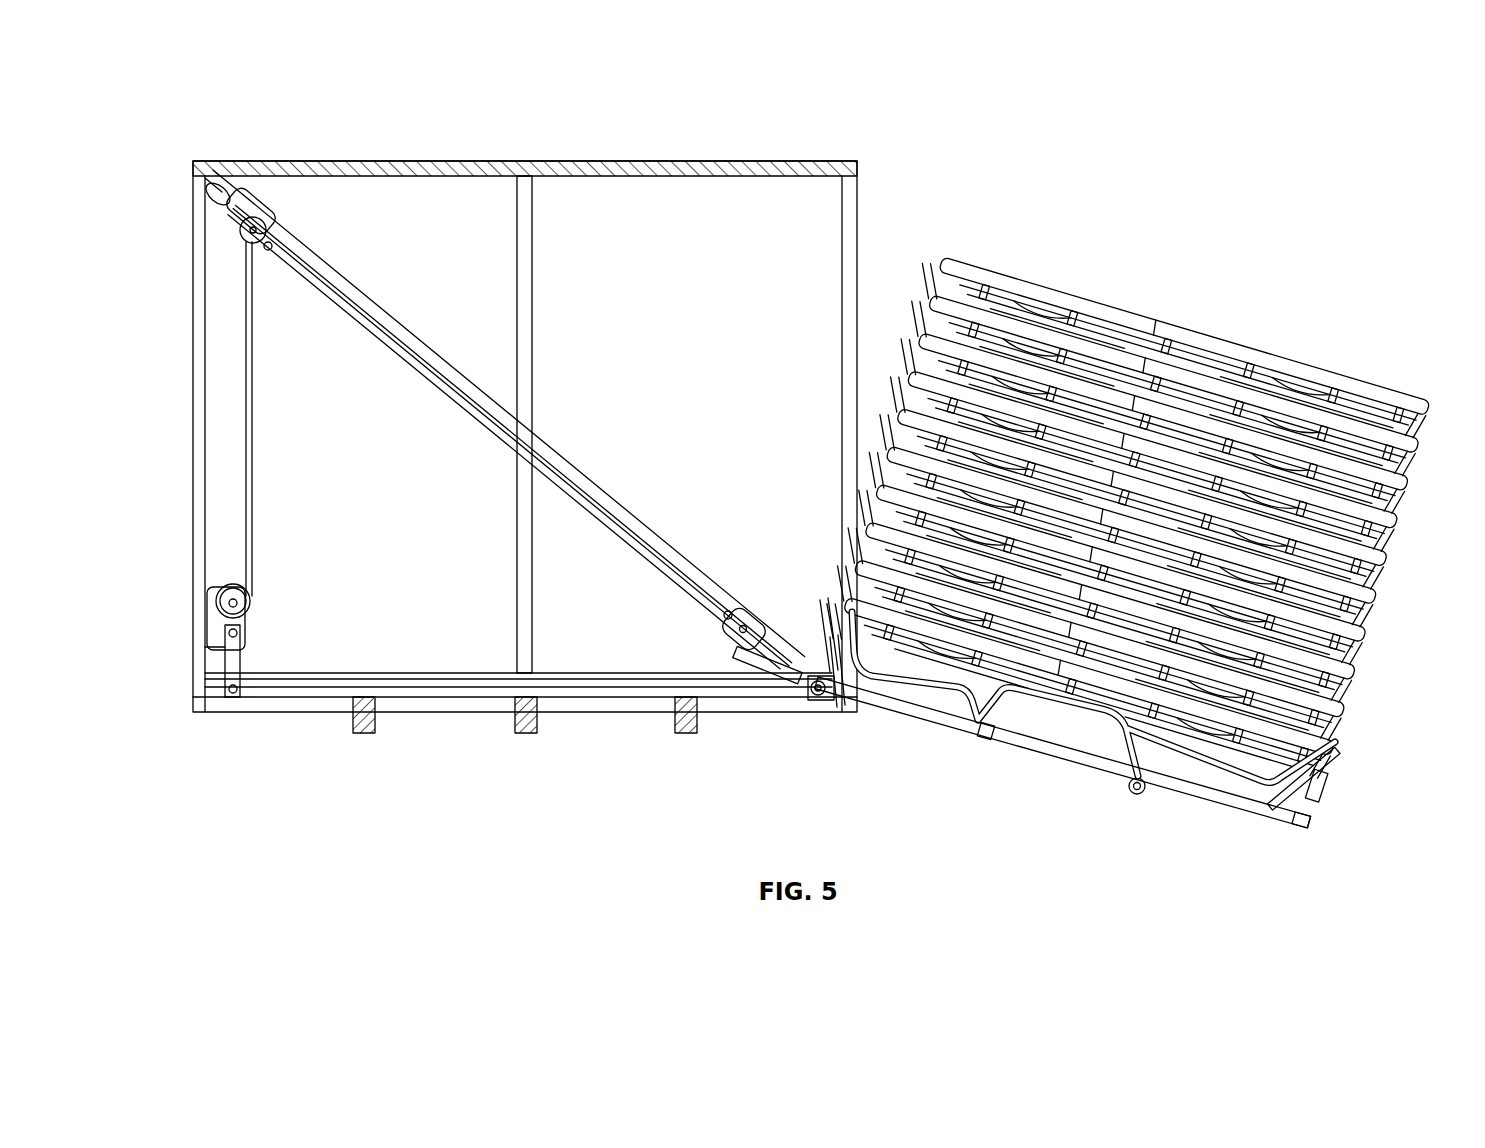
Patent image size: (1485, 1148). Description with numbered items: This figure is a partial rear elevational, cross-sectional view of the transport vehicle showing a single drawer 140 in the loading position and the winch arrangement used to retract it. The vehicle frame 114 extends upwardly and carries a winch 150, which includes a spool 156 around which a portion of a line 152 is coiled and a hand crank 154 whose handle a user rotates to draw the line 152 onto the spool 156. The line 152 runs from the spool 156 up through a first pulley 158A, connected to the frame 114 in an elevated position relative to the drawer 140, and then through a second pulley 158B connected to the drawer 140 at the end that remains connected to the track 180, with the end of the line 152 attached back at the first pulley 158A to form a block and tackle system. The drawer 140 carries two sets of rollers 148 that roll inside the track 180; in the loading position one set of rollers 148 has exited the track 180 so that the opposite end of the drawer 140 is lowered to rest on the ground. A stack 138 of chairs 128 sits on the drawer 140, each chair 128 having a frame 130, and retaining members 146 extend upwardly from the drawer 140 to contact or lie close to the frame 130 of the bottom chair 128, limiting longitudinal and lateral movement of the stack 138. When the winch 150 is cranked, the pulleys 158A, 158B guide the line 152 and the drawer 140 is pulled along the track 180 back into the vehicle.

The frame 114 is at (770, 161).
The stackable chair 128 is at (1378, 626).
The chair frame 130 is at (918, 690).
The stack of chairs 138 is at (1143, 567).
The drawer 140 is at (1226, 812).
The retaining member 146 is at (1318, 796).
The roller 148 is at (818, 697).
The winch 150 is at (220, 620).
The line 152 is at (432, 368).
The hand crank 154 is at (232, 657).
The spool 156 is at (216, 580).
The first pulley 158A is at (240, 228).
The second pulley 158B is at (733, 634).
The track 180 is at (332, 687).